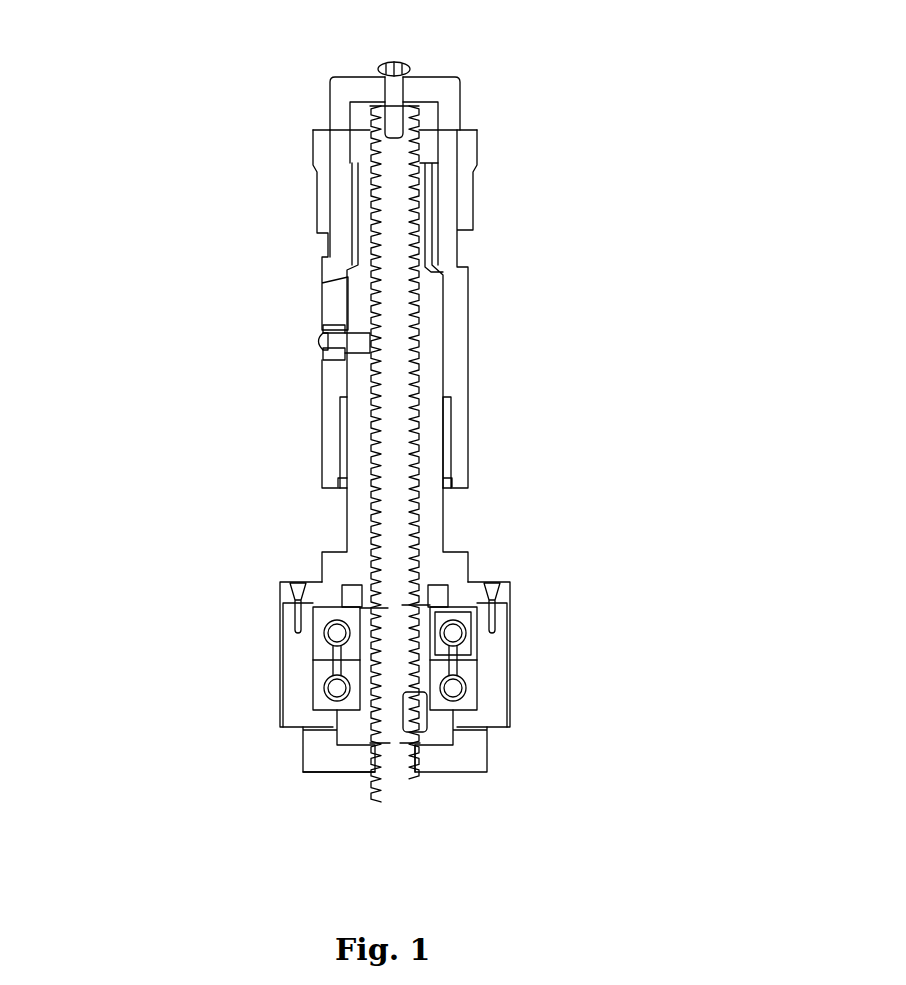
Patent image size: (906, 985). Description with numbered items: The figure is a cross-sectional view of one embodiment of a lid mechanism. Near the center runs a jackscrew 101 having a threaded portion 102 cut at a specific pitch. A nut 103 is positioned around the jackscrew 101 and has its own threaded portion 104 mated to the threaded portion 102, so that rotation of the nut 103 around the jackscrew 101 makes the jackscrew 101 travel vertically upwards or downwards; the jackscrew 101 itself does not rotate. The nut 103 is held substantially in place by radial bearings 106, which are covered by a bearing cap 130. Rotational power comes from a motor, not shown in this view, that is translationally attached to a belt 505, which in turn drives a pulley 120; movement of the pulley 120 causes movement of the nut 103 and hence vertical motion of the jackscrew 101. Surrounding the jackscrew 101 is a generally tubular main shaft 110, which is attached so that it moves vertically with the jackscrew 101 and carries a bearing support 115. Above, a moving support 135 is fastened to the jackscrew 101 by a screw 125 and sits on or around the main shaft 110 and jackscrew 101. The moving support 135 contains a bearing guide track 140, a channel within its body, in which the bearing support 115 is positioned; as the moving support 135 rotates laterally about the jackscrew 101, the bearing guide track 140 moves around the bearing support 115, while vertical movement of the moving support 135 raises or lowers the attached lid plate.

The screw 125 is at (398, 66).
The moving support 135 is at (458, 307).
The jackscrew 101 is at (393, 372).
The main shaft 110 is at (432, 447).
The bearing support 115 is at (352, 340).
The bearing guide track 140 is at (318, 352).
The bearing cap 130 is at (293, 655).
The nut 103 is at (425, 618).
The radial bearings 106 is at (477, 658).
The belt 505 is at (317, 748).
The pulley 120 is at (303, 773).
The threaded portion 102 is at (403, 730).
The threaded portion 104 is at (428, 718).